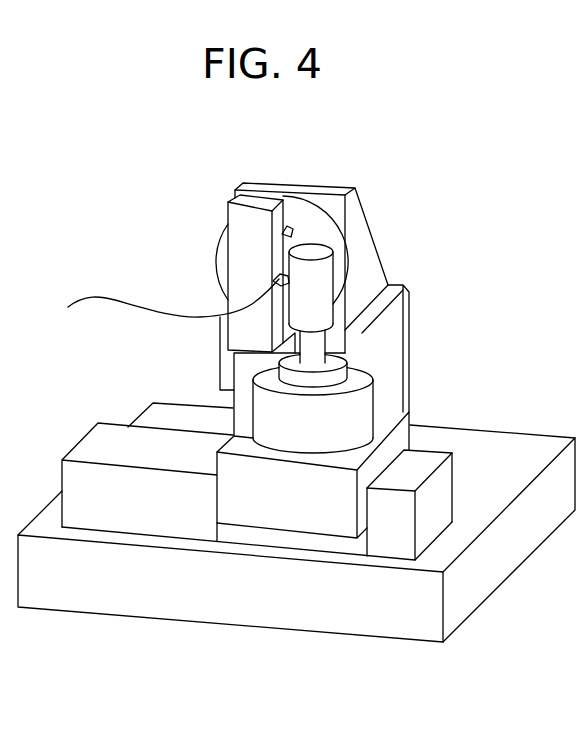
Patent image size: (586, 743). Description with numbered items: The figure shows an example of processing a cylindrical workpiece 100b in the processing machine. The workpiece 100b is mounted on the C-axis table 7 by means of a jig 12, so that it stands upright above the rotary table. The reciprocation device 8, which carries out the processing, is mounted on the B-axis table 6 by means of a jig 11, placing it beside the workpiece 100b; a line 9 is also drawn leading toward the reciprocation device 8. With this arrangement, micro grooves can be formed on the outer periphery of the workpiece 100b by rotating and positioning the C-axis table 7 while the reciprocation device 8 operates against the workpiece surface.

The B-axis table 6 is at (293, 208).
The C-axis table 7 is at (347, 419).
The reciprocation device 8 is at (250, 274).
The cable 9 is at (164, 303).
The jig 11 is at (287, 230).
The jig 12 is at (313, 347).
The cylindrical workpiece 100b is at (312, 273).